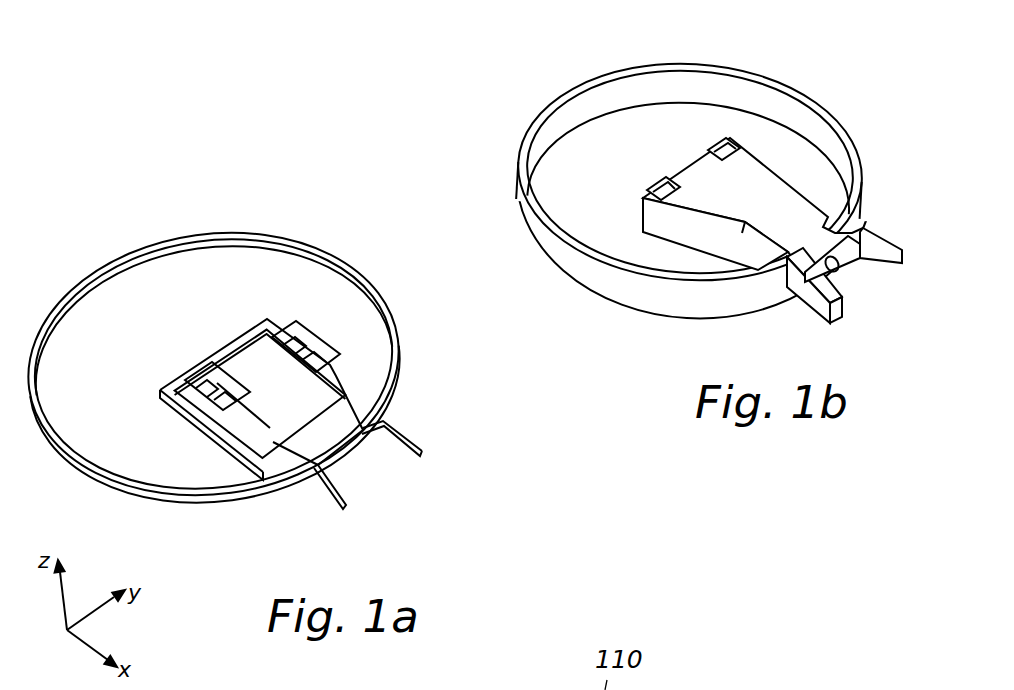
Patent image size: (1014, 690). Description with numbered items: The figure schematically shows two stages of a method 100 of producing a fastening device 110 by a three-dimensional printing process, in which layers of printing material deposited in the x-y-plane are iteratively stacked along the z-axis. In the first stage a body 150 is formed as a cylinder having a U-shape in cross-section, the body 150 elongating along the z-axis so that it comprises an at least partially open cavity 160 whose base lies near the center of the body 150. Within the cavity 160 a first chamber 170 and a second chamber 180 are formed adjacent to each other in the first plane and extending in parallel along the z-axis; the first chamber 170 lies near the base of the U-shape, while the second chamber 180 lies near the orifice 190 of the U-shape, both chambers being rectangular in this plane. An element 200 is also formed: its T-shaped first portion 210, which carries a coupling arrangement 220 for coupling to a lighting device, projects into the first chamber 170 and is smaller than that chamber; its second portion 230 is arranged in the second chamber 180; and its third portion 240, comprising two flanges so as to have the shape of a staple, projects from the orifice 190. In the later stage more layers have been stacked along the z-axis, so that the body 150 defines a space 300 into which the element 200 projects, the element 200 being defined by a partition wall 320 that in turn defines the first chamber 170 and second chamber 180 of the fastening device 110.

In FIG. 1A, the method 100 is at (375, 135).
In FIG. 1A, the fastening device 110 is at (253, 233).
In FIG. 1A, the body 150 is at (95, 275).
In FIG. 1B, the body 150 is at (592, 84).
In FIG. 1A, the cavity 160 is at (289, 377).
In FIG. 1A, the first chamber 170 is at (217, 410).
In FIG. 1B, the first chamber 170 is at (702, 215).
In FIG. 1A, the second chamber 180 is at (265, 467).
In FIG. 1B, the second chamber 180 is at (779, 262).
In FIG. 1A, the orifice 190 is at (302, 480).
In FIG. 1A, the element 200 is at (380, 455).
In FIG. 1B, the element 200 is at (855, 288).
In FIG. 1A, the first portion 210 is at (238, 377).
In FIG. 1A, the coupling arrangement 220 is at (190, 372).
In FIG. 1A, the second portion 230 is at (283, 430).
In FIG. 1A, the third portion 240 is at (338, 452).
In FIG. 1B, the space 300 is at (657, 260).
In FIG. 1B, the partition wall 320 is at (745, 253).